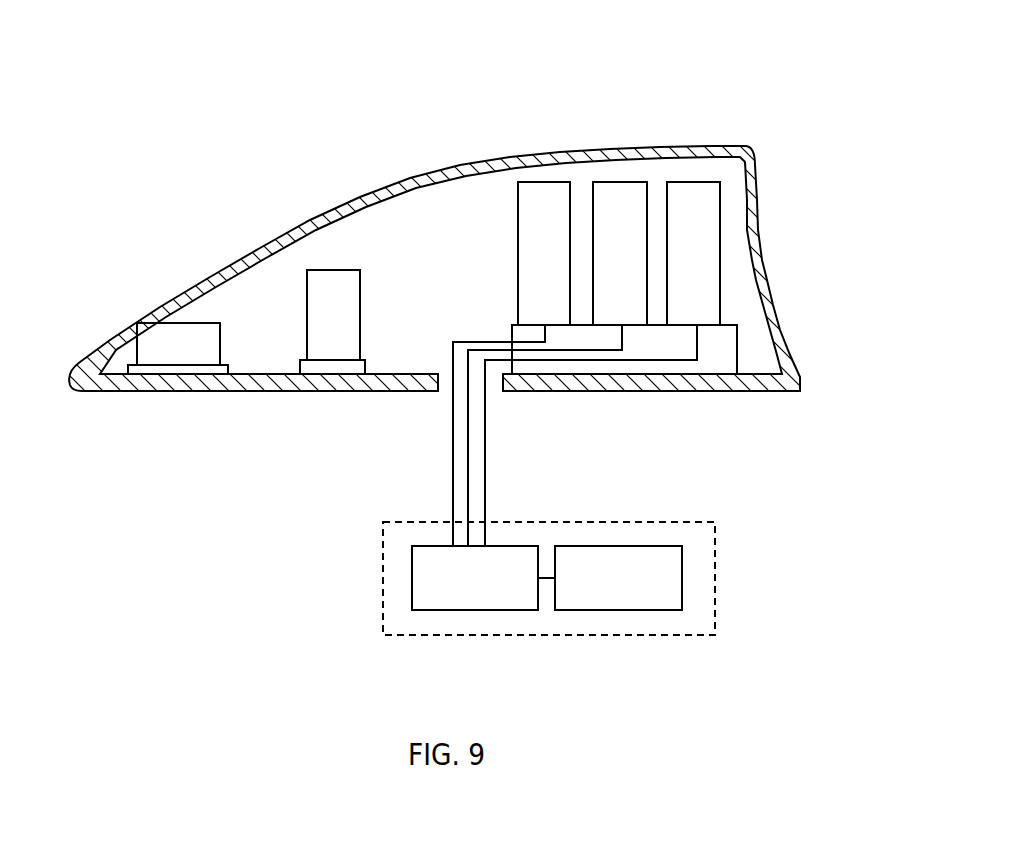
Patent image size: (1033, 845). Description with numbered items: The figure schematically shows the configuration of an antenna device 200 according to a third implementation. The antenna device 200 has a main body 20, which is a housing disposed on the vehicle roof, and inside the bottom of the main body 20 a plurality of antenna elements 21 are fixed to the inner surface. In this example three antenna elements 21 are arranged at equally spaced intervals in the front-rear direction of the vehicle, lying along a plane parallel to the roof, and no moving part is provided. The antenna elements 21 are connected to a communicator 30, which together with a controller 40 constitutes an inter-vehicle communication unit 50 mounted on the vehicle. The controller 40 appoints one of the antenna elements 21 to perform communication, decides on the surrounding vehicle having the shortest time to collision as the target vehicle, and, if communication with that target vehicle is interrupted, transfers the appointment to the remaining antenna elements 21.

The antenna device 200 is at (426, 90).
The main body 20 is at (352, 202).
The antenna element 21 is at (541, 182).
The communicator 30 is at (476, 612).
The controller 40 is at (612, 612).
The inter-vehicle communication unit 50 is at (697, 637).